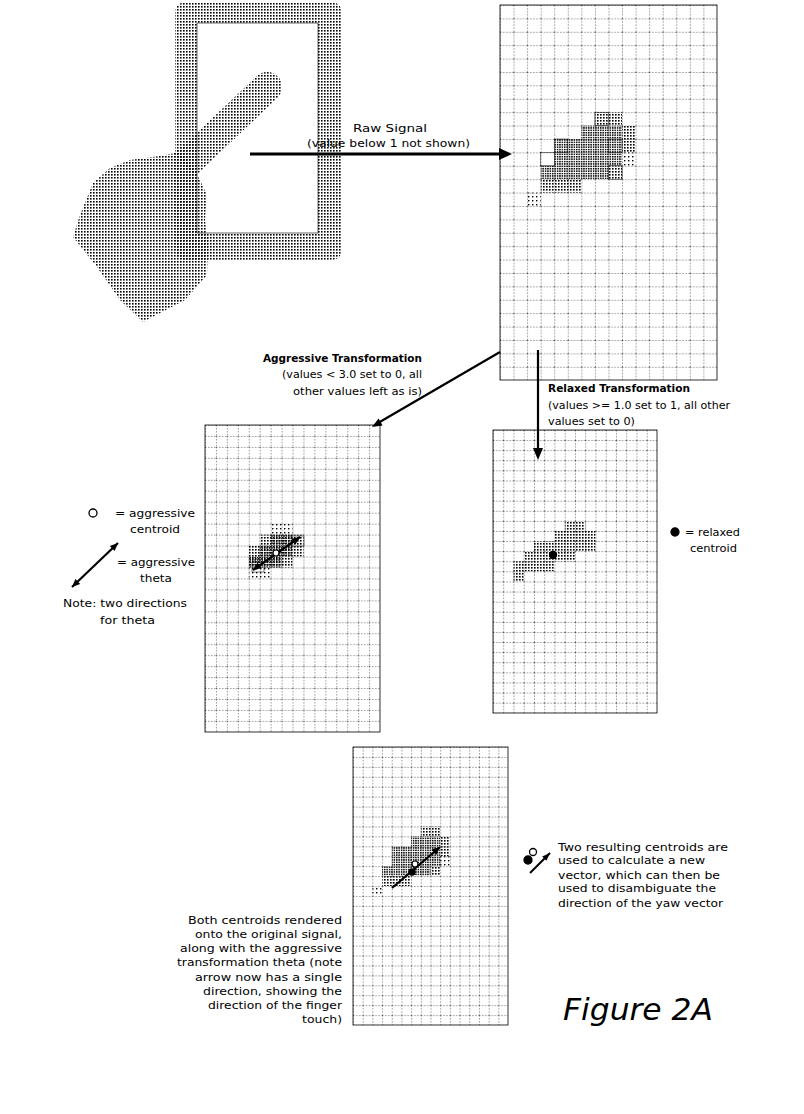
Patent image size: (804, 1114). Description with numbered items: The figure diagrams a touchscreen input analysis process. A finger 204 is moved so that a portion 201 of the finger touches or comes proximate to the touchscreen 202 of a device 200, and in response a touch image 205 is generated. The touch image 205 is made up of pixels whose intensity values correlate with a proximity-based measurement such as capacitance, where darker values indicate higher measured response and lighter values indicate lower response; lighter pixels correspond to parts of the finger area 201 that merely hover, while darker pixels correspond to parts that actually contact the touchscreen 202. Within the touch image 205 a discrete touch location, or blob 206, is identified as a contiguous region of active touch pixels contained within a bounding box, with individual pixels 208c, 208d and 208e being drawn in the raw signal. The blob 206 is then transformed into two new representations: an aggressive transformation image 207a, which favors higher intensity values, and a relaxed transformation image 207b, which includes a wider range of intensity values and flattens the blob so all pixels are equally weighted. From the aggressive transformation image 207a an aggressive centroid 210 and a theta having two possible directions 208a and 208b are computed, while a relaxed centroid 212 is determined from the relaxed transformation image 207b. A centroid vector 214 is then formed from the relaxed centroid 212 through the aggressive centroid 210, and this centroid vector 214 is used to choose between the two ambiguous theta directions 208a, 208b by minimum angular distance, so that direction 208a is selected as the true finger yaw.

The device 200 is at (340, 16).
The portion of finger 201 is at (227, 100).
The touchscreen 202 is at (280, 73).
The finger 204 is at (183, 143).
The touch image 205 is at (492, 234).
The blob 206 is at (644, 131).
The aggressive transformation image 207a is at (195, 444).
The relaxed transformation image 207b is at (665, 476).
The theta direction 208a is at (560, 140).
The theta direction 208b is at (610, 173).
The signal cell 208c is at (553, 160).
The signal cell 208d is at (600, 120).
The signal cell 208e is at (607, 143).
The aggressive centroid 210 is at (290, 557).
The relaxed centroid 212 is at (556, 556).
The centroid vector 214 is at (420, 848).